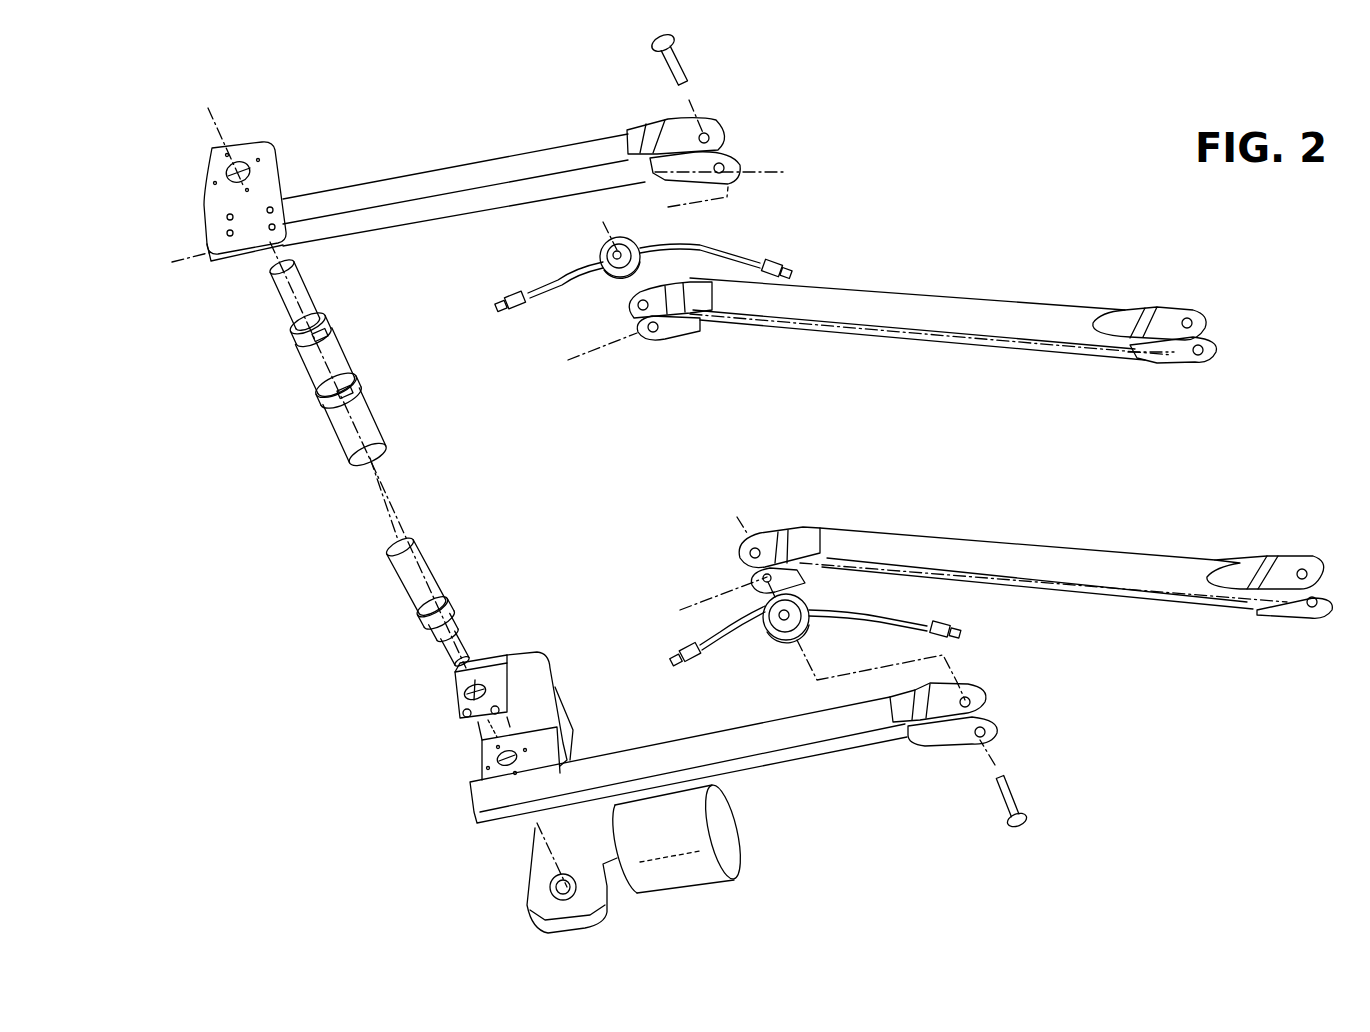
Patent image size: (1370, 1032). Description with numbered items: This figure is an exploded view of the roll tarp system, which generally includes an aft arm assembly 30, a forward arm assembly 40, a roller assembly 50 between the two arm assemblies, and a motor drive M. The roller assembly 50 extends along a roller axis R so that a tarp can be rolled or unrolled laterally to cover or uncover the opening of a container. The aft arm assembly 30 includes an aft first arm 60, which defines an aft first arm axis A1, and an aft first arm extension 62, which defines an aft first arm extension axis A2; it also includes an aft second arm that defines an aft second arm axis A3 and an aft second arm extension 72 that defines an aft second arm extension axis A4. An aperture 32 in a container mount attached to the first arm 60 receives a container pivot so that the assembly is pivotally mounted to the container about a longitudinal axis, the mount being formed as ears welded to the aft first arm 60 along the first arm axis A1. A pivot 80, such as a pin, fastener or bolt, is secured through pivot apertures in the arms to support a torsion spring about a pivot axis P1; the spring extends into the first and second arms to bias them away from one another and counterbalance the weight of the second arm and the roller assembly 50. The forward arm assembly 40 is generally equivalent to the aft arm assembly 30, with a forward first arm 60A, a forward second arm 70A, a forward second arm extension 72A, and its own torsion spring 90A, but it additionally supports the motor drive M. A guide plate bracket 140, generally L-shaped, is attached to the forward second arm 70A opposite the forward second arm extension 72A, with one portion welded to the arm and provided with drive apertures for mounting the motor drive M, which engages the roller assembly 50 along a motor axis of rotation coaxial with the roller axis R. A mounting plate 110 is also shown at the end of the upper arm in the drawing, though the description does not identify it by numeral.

The mounting bracket 110 is at (263, 170).
The aft second arm extension 72 is at (673, 132).
The pivot 80 is at (683, 70).
The pivot axis P1 is at (613, 246).
The aft second arm extension axis A4 is at (777, 170).
The aft first arm 60 is at (983, 310).
The aperture 32 is at (1180, 312).
The aft first arm axis A1 is at (1170, 352).
The aft arm assembly 30 is at (899, 348).
The aft first arm extension 62 is at (662, 342).
The aft first arm extension axis A2 is at (570, 358).
The aft second arm axis A3 is at (187, 264).
The roller axis R is at (390, 497).
The roller assembly 50 is at (320, 446).
The forward first arm 60A is at (1143, 570).
The torsion spring 90A is at (712, 645).
The forward second arm extension 72A is at (1000, 718).
The forward second arm 70A is at (803, 753).
The forward arm assembly 40 is at (862, 719).
The guide plate bracket 140 is at (482, 730).
The motor drive M is at (727, 840).